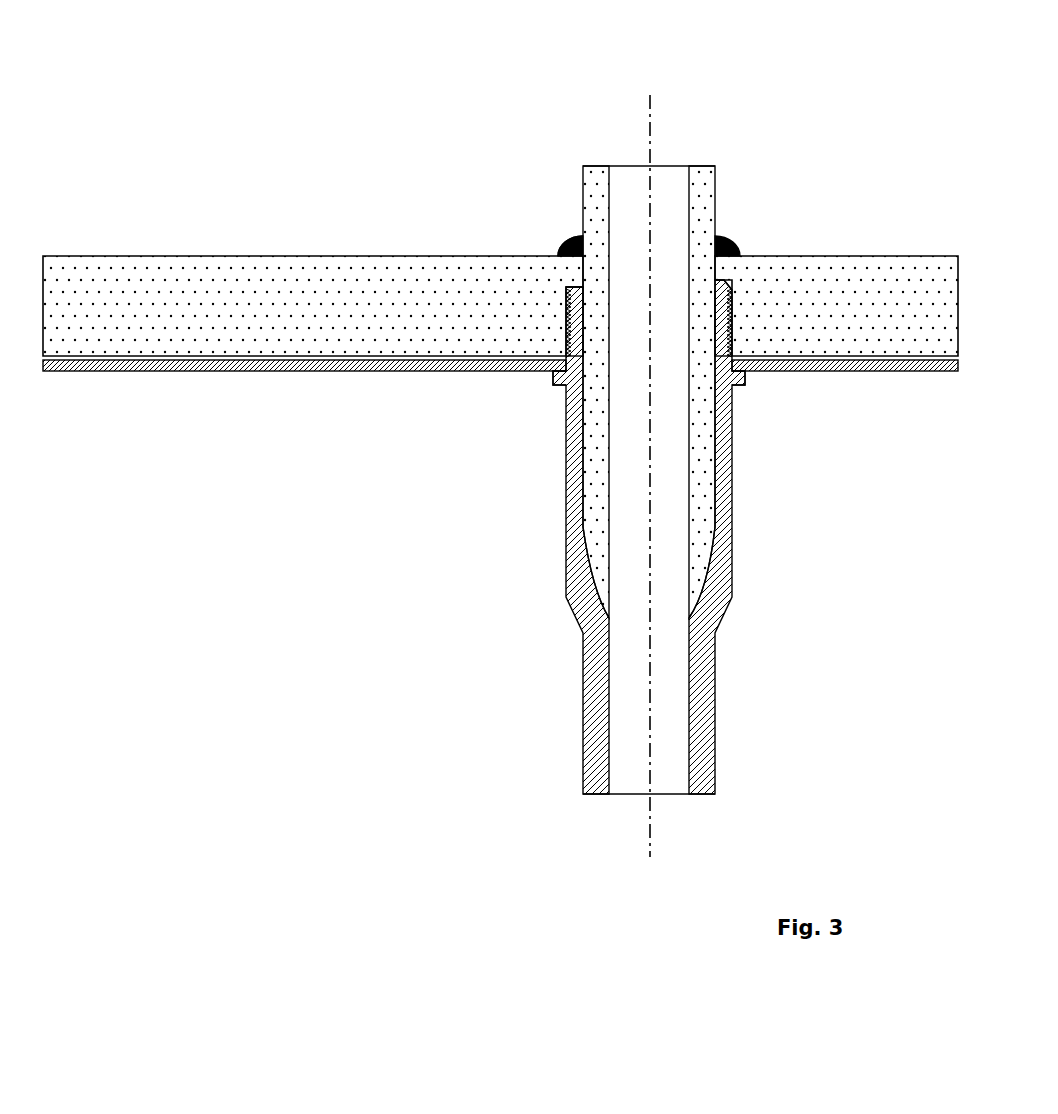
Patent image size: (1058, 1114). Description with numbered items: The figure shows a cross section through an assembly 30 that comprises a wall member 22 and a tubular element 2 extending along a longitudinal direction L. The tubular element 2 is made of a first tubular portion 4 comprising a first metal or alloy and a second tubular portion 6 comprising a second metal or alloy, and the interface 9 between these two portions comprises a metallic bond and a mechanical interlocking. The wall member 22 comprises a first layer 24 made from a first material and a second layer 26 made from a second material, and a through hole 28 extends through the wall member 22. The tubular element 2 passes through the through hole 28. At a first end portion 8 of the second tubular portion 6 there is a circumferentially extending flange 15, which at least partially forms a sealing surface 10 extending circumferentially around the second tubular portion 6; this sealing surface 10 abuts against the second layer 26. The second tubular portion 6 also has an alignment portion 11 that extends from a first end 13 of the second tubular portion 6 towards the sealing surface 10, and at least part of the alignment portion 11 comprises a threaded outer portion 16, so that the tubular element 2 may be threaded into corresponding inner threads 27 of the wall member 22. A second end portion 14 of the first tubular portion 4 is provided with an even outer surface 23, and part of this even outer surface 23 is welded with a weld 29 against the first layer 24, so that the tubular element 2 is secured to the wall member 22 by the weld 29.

The tubular element 2 is at (689, 537).
The first tubular portion 4 is at (705, 180).
The second tubular portion 6 is at (702, 707).
The first end portion 8 is at (562, 325).
The interface 9 is at (689, 537).
The sealing surface 10 is at (565, 368).
The alignment portion 11 is at (735, 300).
The first end 13 is at (722, 282).
The second end portion 14 is at (637, 451).
The flange 15 is at (562, 386).
The threaded outer portion 16 is at (740, 325).
The wall member 22 is at (500, 258).
The even outer surface 23 is at (577, 217).
The first layer 24 is at (241, 320).
The second layer 26 is at (272, 371).
The inner threads 27 is at (578, 316).
The through hole 28 is at (573, 278).
The weld 29 is at (567, 238).
The assembly 30 is at (380, 88).
The longitudinal direction L is at (650, 808).